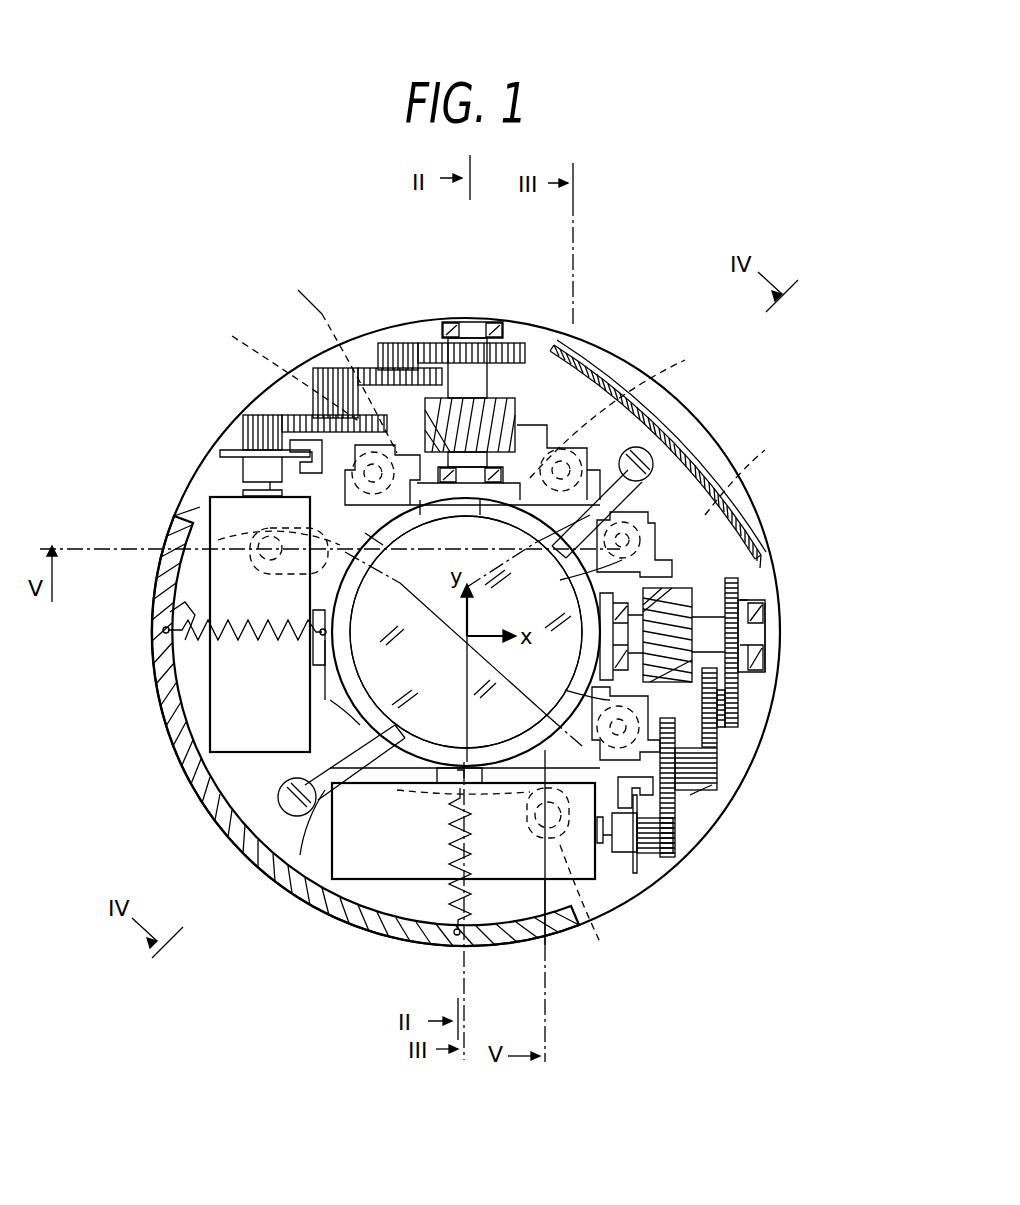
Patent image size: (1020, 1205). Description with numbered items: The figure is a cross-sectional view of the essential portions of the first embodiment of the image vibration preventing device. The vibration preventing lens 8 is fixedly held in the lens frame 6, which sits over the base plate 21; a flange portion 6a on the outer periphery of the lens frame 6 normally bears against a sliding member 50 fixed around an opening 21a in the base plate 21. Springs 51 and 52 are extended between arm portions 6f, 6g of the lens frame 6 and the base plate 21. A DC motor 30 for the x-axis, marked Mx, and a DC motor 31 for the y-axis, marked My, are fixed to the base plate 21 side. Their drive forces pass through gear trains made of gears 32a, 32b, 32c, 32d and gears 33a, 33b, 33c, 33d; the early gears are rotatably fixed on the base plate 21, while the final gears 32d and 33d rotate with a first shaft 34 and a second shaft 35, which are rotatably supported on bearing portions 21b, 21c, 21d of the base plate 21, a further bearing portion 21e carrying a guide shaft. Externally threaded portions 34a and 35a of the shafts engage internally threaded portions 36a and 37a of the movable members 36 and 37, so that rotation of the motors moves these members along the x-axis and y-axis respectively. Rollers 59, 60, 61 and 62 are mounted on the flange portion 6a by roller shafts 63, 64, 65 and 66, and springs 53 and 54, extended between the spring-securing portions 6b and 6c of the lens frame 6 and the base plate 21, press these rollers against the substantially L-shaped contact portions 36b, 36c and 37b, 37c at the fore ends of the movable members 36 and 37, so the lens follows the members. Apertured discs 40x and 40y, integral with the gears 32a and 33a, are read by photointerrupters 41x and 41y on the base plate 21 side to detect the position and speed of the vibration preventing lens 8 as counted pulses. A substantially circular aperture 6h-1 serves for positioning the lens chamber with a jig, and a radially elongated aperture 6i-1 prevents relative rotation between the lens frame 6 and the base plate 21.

The lens frame 6 is at (437, 760).
The vibration preventing lens 8 is at (452, 666).
The base plate 21 is at (235, 780).
The DC motor for y-axis 31 is at (185, 690).
The y-axis motor designation My is at (260, 624).
The x-axis motor designation Mx is at (463, 831).
The spring 53 is at (170, 612).
The spring 54 is at (470, 935).
The apertured disc 40y is at (222, 452).
The photointerrupter 41y is at (262, 415).
The gear 33a is at (300, 420).
The gear 33b is at (365, 372).
The gear 33c is at (395, 343).
The final gear 33d is at (518, 343).
The movable member on y-axis side 37 is at (518, 425).
The bearing portion 21d is at (478, 322).
The internally threaded portion 37a is at (414, 385).
The second shaft 35 is at (545, 425).
The externally threaded portion 35a is at (590, 450).
The roller 59 is at (520, 598).
The arm portion 6g is at (600, 450).
The roller 61 is at (620, 407).
The roller shaft 63 is at (747, 466).
The spring 52 is at (650, 457).
The spring 51 is at (285, 812).
The arm portion 6f is at (300, 855).
The movable member on x-axis side 36 is at (675, 590).
The internally threaded portion 36a is at (705, 618).
The first shaft 34 is at (738, 610).
The final gear 32d is at (740, 582).
The bearing portion 21b is at (770, 608).
The externally threaded portion 34a is at (695, 650).
The gear 32c is at (720, 722).
The bearing portion 21c is at (607, 680).
The roller shaft 64 is at (718, 770).
The roller 60 is at (717, 790).
The gear 32b is at (717, 778).
The photointerrupter 41x is at (690, 800).
The apertured disc 40x is at (628, 855).
The gear 32a is at (640, 860).
The aperture 6h-1 is at (573, 745).
The flange portion 6a is at (345, 545).
The aperture 6i-1 is at (258, 538).
The spring-securing portion 6b is at (318, 652).
The opening 21a is at (330, 690).
The sliding member 50 is at (322, 718).
The spring-securing portion 6c is at (440, 783).
The DC motor for x-axis 30 is at (565, 880).
The roller 62 is at (278, 368).
The roller shaft 66 is at (333, 359).
The bearing portion 21e is at (448, 500).
The contact portion 37c is at (520, 500).
The contact portion 37b is at (383, 520).
The roller shaft 65 is at (555, 552).
The contact portion 36c is at (580, 585).
The contact portion 36b is at (600, 740).